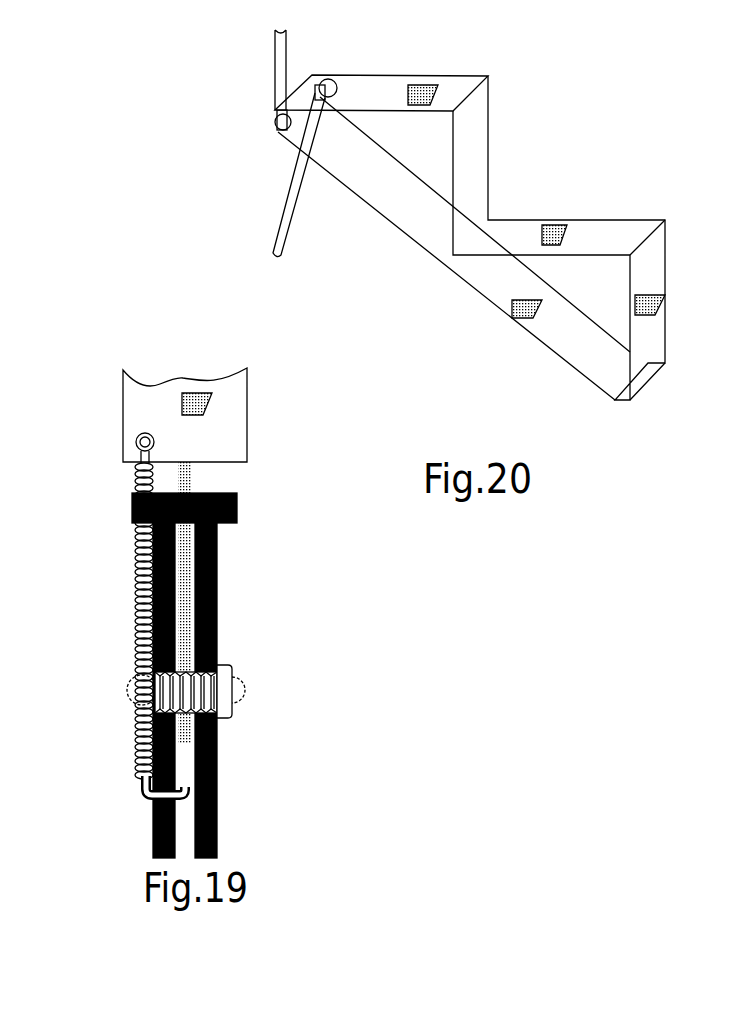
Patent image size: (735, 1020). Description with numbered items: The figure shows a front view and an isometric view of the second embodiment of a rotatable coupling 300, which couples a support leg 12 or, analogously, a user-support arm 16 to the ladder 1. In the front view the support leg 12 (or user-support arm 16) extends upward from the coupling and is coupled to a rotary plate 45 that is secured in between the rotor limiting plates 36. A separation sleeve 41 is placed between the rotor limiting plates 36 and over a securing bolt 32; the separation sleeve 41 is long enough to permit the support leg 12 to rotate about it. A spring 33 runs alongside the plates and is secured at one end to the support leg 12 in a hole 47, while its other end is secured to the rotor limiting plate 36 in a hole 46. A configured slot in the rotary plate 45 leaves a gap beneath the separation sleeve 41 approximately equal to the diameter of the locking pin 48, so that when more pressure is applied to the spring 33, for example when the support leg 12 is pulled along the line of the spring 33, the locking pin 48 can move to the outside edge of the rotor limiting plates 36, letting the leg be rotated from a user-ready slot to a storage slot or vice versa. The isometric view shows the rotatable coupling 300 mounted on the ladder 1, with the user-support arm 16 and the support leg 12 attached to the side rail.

In FIG. 20, the ladder 1 is at (578, 228).
In FIG. 20, the support leg 12 is at (283, 232).
In FIG. 19, the support leg 12 is at (185, 370).
In FIG. 20, the user-support arm 16 is at (287, 47).
In FIG. 19, the user-support arm 16 is at (182, 377).
In FIG. 20, the rotatable coupling 300 is at (338, 92).
In FIG. 19, the rotatable coupling 300 is at (222, 556).
In FIG. 19, the securing bolt 32 is at (237, 690).
In FIG. 19, the spring 33 is at (132, 567).
In FIG. 19, the rotor limiting plate 36 is at (218, 727).
In FIG. 19, the separation sleeve 41 is at (193, 668).
In FIG. 19, the rotary plate 45 is at (193, 602).
In FIG. 19, the hole 46 is at (140, 800).
In FIG. 19, the hole 47 is at (136, 440).
In FIG. 19, the locking pin 48 is at (238, 508).